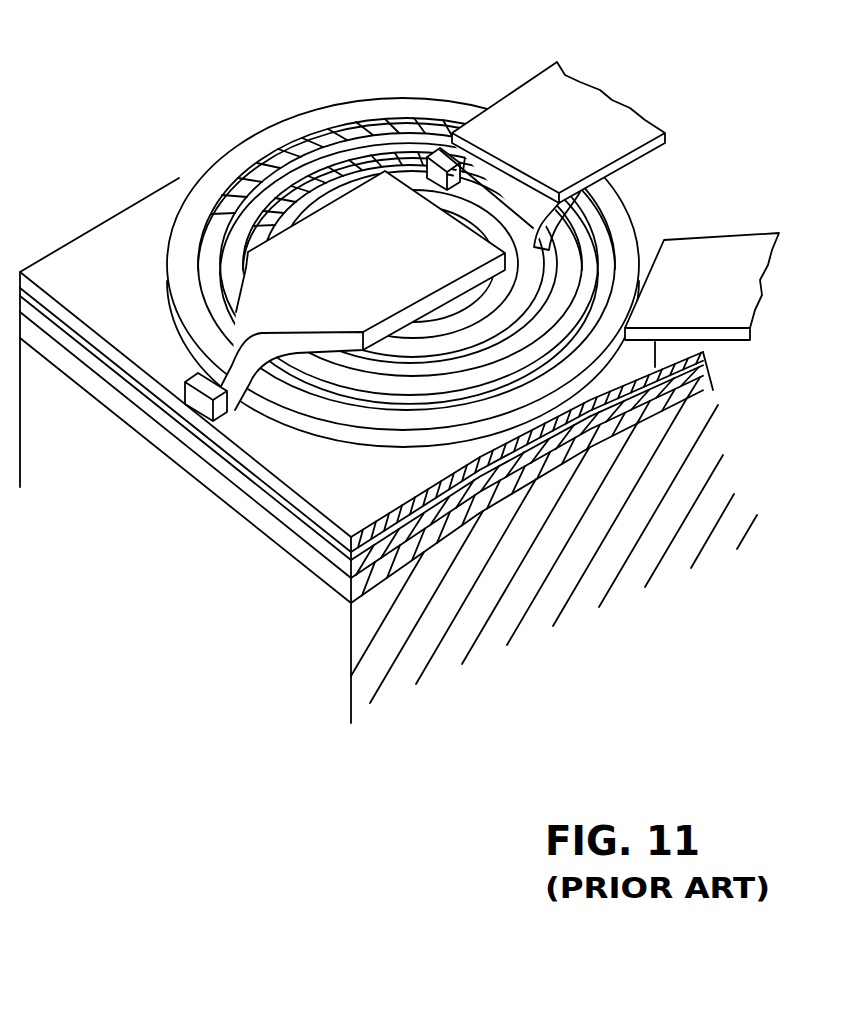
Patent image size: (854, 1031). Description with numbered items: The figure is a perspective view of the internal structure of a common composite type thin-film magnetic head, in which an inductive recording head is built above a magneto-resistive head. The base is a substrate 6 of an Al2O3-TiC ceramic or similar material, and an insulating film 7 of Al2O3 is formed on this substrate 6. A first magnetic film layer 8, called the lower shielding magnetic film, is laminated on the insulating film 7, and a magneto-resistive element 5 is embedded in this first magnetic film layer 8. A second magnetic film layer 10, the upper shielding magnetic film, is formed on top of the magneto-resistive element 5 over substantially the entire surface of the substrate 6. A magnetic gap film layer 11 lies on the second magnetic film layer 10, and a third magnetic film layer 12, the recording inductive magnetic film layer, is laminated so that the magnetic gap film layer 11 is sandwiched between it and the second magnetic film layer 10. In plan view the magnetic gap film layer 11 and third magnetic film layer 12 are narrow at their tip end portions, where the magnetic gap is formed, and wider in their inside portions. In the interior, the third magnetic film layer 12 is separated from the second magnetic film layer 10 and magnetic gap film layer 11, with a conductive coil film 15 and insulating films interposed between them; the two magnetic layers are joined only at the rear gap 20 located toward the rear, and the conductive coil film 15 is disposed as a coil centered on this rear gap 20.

The magneto-resistive element 5 is at (195, 433).
The substrate 6 is at (388, 450).
The insulating film 7 is at (268, 533).
The first magnetic film layer 8 is at (248, 500).
The second magnetic film layer 10 is at (228, 458).
The magnetic gap film layer 11 is at (185, 413).
The third magnetic film layer 12 is at (252, 290).
The conductive coil film 15 is at (208, 176).
The rear gap 20 is at (455, 208).